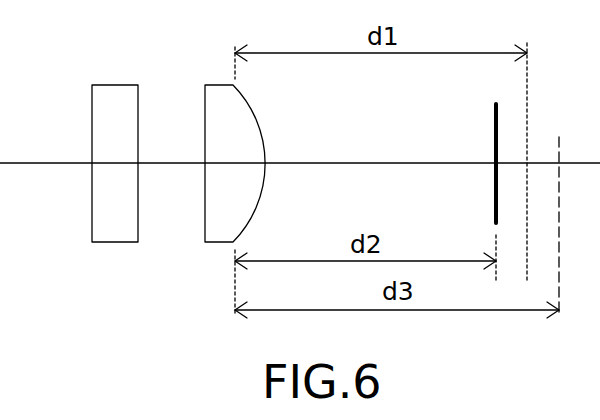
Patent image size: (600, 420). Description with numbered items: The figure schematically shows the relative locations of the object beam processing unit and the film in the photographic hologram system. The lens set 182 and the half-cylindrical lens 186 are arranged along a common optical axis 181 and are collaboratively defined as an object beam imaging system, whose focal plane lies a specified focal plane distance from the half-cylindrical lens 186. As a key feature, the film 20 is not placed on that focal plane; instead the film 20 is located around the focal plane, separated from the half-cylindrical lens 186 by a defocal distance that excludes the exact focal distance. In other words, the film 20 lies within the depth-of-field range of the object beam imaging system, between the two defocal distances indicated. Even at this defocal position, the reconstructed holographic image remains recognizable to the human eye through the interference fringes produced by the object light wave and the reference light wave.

The lens set 182 is at (118, 95).
The half-cylindrical lens 186 is at (218, 93).
The optical axis 181 is at (397, 163).
The film 20 is at (494, 143).